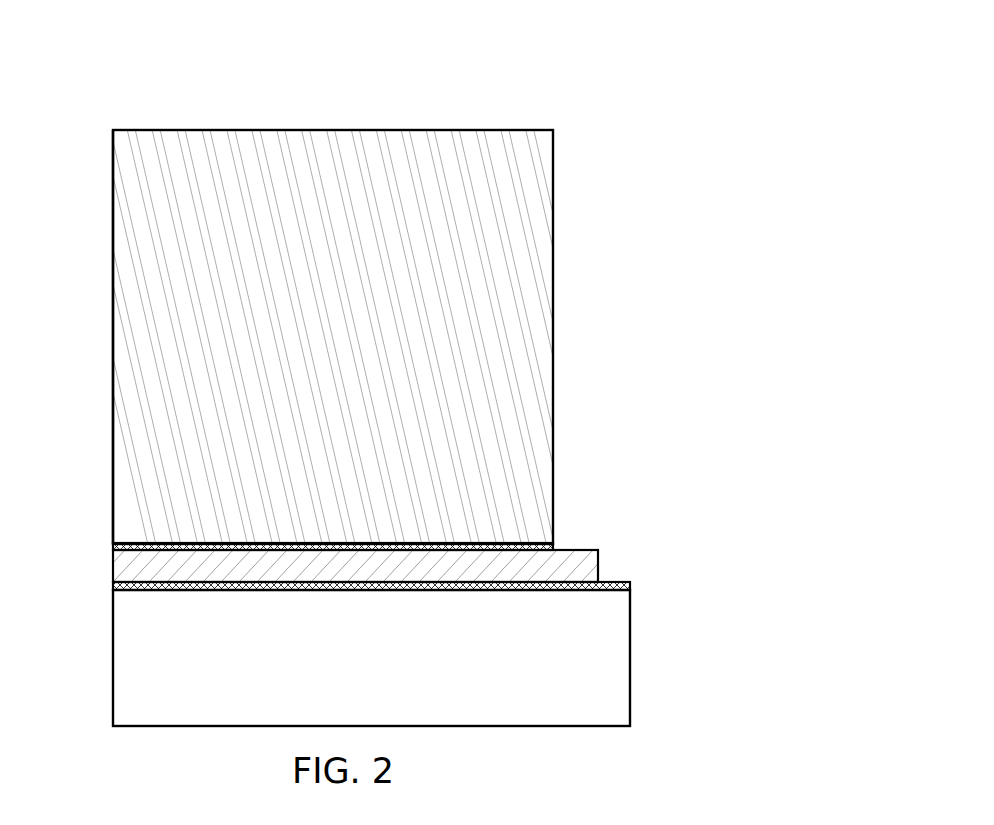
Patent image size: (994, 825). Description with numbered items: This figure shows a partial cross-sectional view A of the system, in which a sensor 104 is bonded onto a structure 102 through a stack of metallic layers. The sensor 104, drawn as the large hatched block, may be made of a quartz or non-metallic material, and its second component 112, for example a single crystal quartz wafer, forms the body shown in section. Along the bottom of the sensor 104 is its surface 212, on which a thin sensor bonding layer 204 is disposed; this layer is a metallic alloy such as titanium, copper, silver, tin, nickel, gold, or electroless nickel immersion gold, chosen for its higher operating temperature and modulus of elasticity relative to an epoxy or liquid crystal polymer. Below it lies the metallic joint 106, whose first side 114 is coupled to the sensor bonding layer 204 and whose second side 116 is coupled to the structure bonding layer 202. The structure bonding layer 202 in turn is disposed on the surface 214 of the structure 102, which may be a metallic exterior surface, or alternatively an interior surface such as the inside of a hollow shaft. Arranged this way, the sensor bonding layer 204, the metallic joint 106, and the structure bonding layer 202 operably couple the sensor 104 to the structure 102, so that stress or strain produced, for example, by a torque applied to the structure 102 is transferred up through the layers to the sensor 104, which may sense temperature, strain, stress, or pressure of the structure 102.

The sensor 104 is at (335, 130).
The second component 112 is at (113, 233).
The sensor bonding layer 204 is at (100, 545).
The metallic joint 106 is at (608, 547).
The structure bonding layer 202 is at (100, 584).
The structure 102 is at (613, 664).
The surface of the sensor 212 is at (540, 535).
The first side of the metallic joint 114 is at (586, 541).
The surface of the structure 214 is at (631, 577).
The second side of the metallic joint 116 is at (605, 592).
The partial cross-sectional view A is at (482, 86).